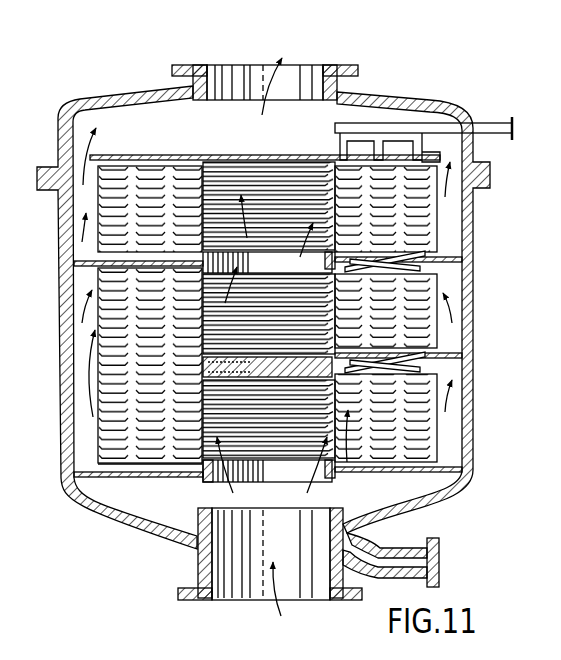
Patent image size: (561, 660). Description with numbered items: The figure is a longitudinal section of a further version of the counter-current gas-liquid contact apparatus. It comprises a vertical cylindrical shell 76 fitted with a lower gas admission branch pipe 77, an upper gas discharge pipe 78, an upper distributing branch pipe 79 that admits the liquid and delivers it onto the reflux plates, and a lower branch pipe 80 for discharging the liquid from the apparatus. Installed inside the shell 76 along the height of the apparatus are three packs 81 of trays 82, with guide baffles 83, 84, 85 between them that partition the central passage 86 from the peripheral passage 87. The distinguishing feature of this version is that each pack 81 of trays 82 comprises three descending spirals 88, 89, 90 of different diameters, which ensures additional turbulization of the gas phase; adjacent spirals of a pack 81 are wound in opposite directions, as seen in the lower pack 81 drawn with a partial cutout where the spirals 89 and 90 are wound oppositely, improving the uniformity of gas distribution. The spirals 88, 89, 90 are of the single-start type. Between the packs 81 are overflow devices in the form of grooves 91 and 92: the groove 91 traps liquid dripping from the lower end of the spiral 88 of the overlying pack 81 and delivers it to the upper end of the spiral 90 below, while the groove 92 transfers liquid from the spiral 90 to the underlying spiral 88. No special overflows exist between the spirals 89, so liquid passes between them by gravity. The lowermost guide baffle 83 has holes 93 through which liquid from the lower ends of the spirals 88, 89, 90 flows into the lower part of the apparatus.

The vertical cylindrical shell 76 is at (475, 445).
The lower gas admission branch pipe 77 is at (178, 594).
The upper gas discharge pipe 78 is at (357, 70).
The upper distributing branch pipe 79 is at (487, 130).
The lower branch pipe 80 is at (439, 567).
The pack of trays 81 is at (440, 219).
The tray 82 is at (160, 455).
The guide baffle 83 is at (74, 263).
The guide baffle 84 is at (262, 378).
The guide baffle 85 is at (300, 156).
The central passage 86 is at (270, 262).
The peripheral passage 87 is at (66, 230).
The descending spiral 88 is at (107, 168).
The descending spiral 89 is at (142, 168).
The descending spiral 90 is at (185, 168).
The groove 91 is at (423, 255).
The groove 92 is at (430, 268).
The holes 93 is at (428, 472).